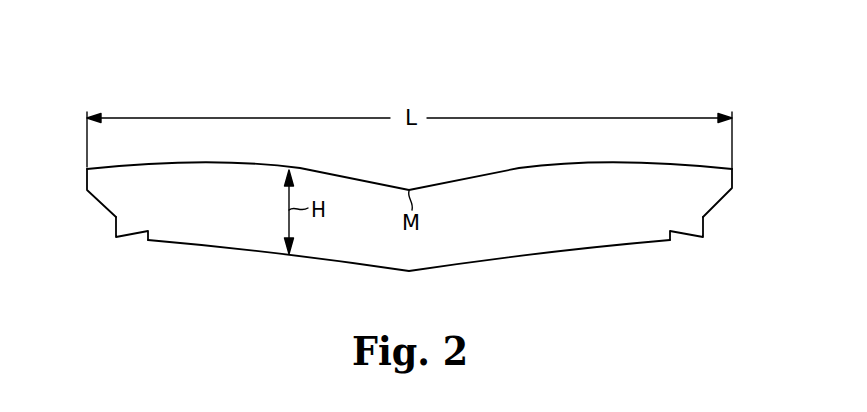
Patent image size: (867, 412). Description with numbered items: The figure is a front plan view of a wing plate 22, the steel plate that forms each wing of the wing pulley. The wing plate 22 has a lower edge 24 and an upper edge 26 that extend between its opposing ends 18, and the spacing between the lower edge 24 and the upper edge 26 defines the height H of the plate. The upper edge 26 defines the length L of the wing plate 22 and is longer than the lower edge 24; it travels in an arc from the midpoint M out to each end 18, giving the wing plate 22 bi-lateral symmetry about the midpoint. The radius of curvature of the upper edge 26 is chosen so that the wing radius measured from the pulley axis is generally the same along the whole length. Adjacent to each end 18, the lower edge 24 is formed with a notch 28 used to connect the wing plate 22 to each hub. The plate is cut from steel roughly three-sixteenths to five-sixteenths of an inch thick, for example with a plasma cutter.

The end 18 is at (87, 178).
The wing plate 22 is at (667, 89).
The lower edge 24 is at (563, 253).
The upper edge 26 is at (543, 165).
The notch 28 is at (131, 238).